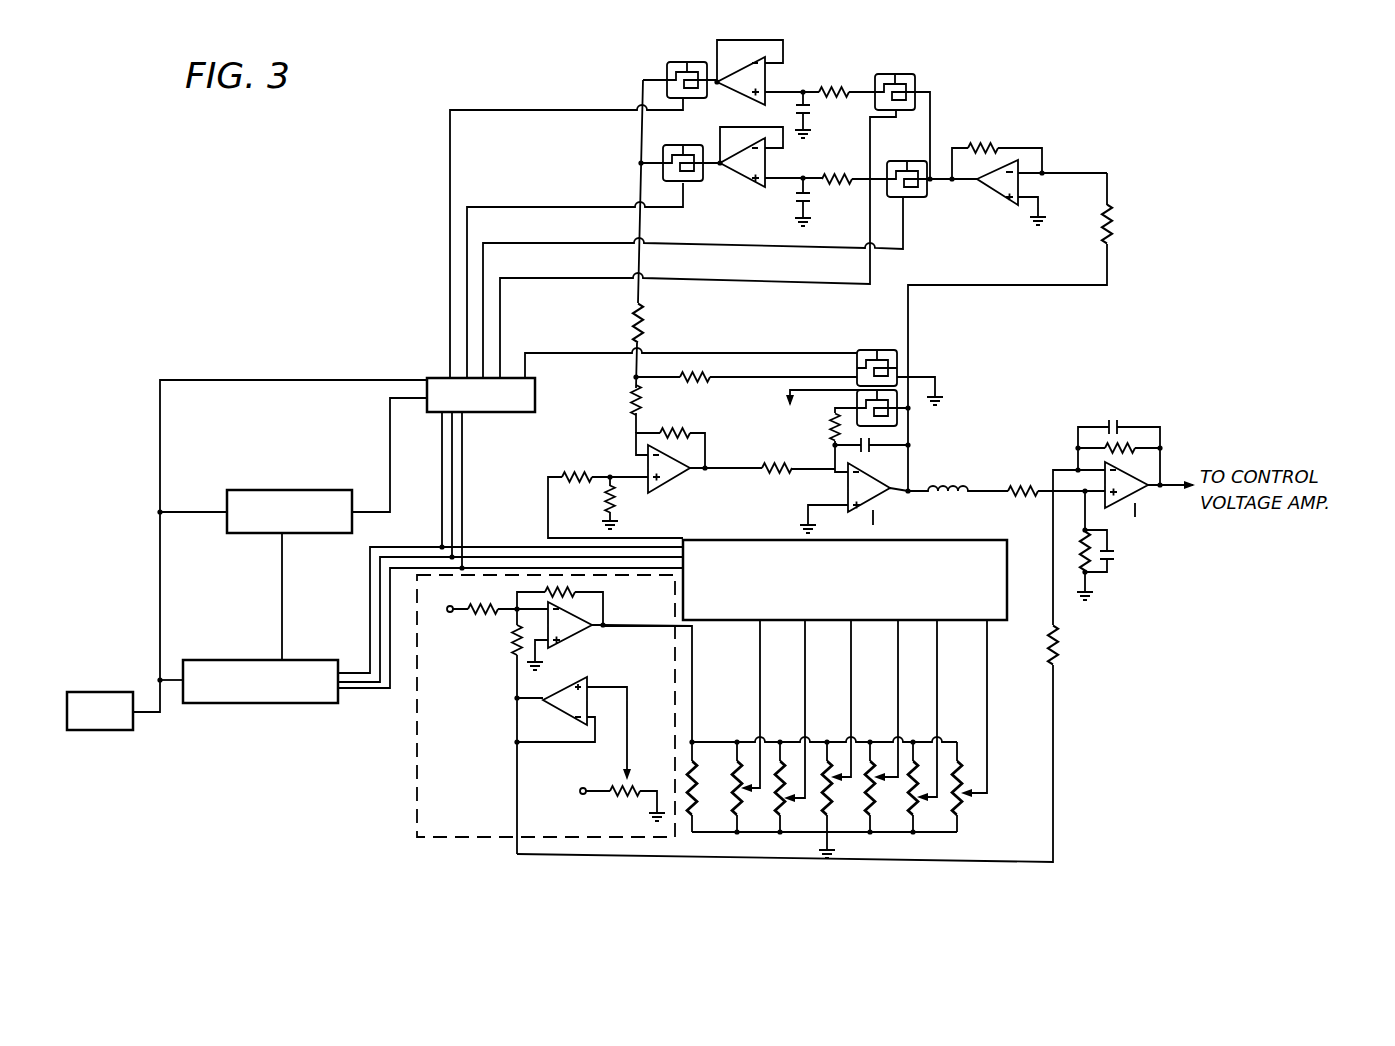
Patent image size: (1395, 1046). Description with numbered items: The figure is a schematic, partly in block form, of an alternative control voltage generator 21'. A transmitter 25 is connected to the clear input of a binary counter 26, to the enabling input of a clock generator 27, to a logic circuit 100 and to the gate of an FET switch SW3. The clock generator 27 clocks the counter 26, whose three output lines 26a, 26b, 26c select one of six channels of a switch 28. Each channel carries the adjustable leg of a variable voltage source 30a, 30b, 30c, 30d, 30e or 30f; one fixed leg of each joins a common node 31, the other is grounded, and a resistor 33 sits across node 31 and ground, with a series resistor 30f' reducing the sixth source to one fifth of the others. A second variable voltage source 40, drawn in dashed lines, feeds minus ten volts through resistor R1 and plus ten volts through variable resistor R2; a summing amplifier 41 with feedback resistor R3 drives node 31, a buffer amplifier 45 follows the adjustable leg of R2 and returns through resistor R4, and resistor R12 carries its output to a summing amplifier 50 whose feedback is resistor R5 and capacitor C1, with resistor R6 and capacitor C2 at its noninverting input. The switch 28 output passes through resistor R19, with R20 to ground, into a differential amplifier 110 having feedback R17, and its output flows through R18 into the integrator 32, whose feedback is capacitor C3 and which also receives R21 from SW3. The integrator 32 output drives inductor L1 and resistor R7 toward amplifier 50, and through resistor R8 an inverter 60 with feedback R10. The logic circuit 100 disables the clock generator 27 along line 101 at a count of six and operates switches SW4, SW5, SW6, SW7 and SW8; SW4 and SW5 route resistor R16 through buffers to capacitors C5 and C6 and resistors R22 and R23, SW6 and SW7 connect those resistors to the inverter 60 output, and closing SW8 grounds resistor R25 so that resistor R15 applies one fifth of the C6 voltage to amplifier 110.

The control voltage generator 21' is at (283, 233).
The logic circuit 100 is at (430, 378).
The line 101 is at (390, 434).
The transmitter 25 is at (120, 730).
The counter 26 is at (257, 703).
The output line 26a is at (421, 547).
The output line 26b is at (380, 584).
The output line 26c is at (352, 689).
The clock generator 27 is at (278, 490).
The switch 28 is at (1018, 539).
The node 31 is at (742, 742).
The resistor 33 is at (708, 788).
The variable voltage source 30a is at (742, 794).
The variable voltage source 30b is at (785, 794).
The variable voltage source 30c is at (830, 794).
The variable voltage source 30d is at (873, 794).
The variable voltage source 30e is at (916, 794).
The variable voltage source 30f is at (942, 788).
The resistor 30f' is at (961, 744).
The second variable voltage source 40 is at (417, 780).
The summing amplifier 41 is at (578, 630).
The buffer amplifier 45 is at (572, 681).
The summing amplifier 50 is at (1142, 494).
The inverter 60 is at (990, 190).
The differential amplifier 110 is at (676, 474).
The integrator 32 is at (885, 496).
The switch SW3 is at (898, 420).
The switch SW4 is at (690, 70).
The switch SW5 is at (690, 136).
The switch SW6 is at (902, 64).
The switch SW7 is at (908, 152).
The switch SW8 is at (884, 352).
The resistor R1 is at (495, 615).
The variable resistor R2 is at (623, 796).
The feedback resistor R3 is at (576, 588).
The resistor R4 is at (512, 655).
The resistor R5 is at (1125, 450).
The resistor R6 is at (1082, 543).
The resistor R7 is at (1030, 489).
The resistor R8 is at (1112, 230).
The feedback resistor R10 is at (997, 146).
The resistor R12 is at (1062, 646).
The resistor R15 is at (630, 402).
The resistor R16 is at (632, 318).
The resistor R17 is at (670, 430).
The resistor R18 is at (770, 466).
The resistor R19 is at (578, 471).
The resistor R20 is at (615, 505).
The resistor R21 is at (830, 425).
The resistor R22 is at (839, 78).
The resistor R23 is at (845, 164).
The resistor R25 is at (704, 376).
The capacitor C1 is at (1114, 421).
The capacitor C2 is at (1116, 557).
The capacitor C3 is at (868, 451).
The capacitor C5 is at (817, 115).
The capacitor C6 is at (818, 202).
The inductor L1 is at (958, 488).